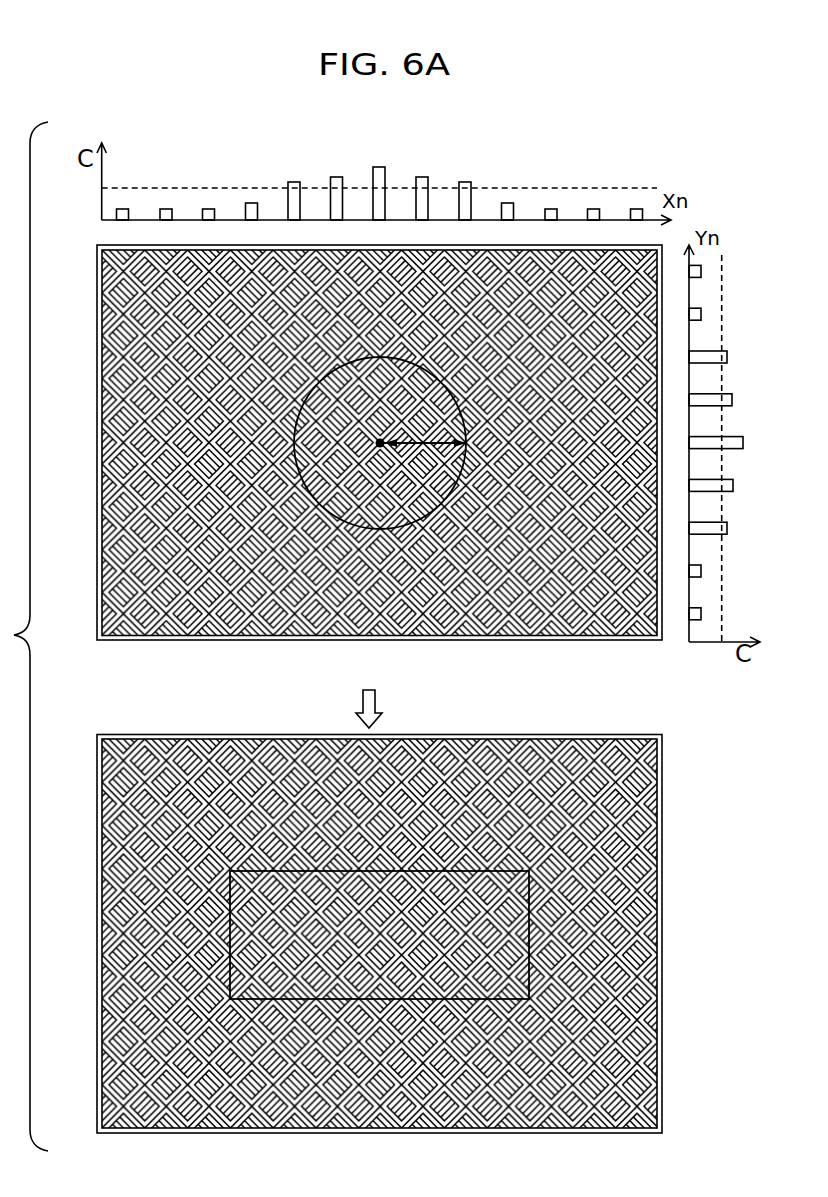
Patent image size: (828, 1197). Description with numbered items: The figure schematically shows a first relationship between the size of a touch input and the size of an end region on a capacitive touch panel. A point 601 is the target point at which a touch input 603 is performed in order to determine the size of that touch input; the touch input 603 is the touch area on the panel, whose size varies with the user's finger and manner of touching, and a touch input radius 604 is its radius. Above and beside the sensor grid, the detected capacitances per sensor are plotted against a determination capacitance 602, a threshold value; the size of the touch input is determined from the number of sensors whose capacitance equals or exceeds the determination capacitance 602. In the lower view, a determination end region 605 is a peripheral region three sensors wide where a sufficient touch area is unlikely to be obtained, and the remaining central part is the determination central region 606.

The point 601 is at (380, 447).
The determination capacitance 602 is at (555, 187).
The touch input 603 is at (330, 513).
The touch input radius 604 is at (425, 444).
The determination end region 605 is at (570, 826).
The determination central region 606 is at (515, 918).